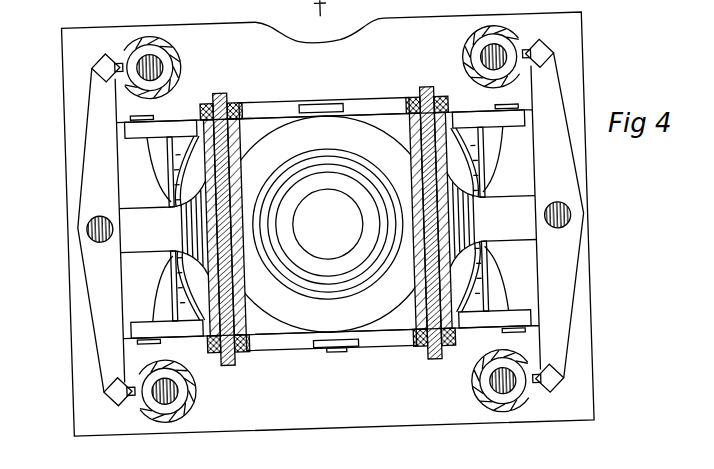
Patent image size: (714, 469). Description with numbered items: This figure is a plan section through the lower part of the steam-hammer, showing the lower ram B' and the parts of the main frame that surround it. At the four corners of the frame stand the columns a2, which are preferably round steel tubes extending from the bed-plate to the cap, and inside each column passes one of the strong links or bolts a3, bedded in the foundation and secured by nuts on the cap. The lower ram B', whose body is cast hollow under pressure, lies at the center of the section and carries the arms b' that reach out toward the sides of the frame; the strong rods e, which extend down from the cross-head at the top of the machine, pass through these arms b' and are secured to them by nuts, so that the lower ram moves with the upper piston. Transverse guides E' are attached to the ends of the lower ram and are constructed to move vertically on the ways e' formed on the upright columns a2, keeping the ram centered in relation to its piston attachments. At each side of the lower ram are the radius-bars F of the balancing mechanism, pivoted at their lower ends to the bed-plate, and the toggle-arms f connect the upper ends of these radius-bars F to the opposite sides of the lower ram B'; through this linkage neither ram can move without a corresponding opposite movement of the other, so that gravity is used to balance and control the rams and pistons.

The columns a2 is at (177, 44).
The links or bolts a3 is at (165, 62).
The rods e is at (325, 222).
The ways e' is at (323, 222).
The toggle-arms f is at (281, 107).
The radius-bars F is at (238, 289).
The arms of the lower ram b' is at (328, 224).
The lower ram B' is at (327, 224).
The transverse guides E' is at (331, 222).